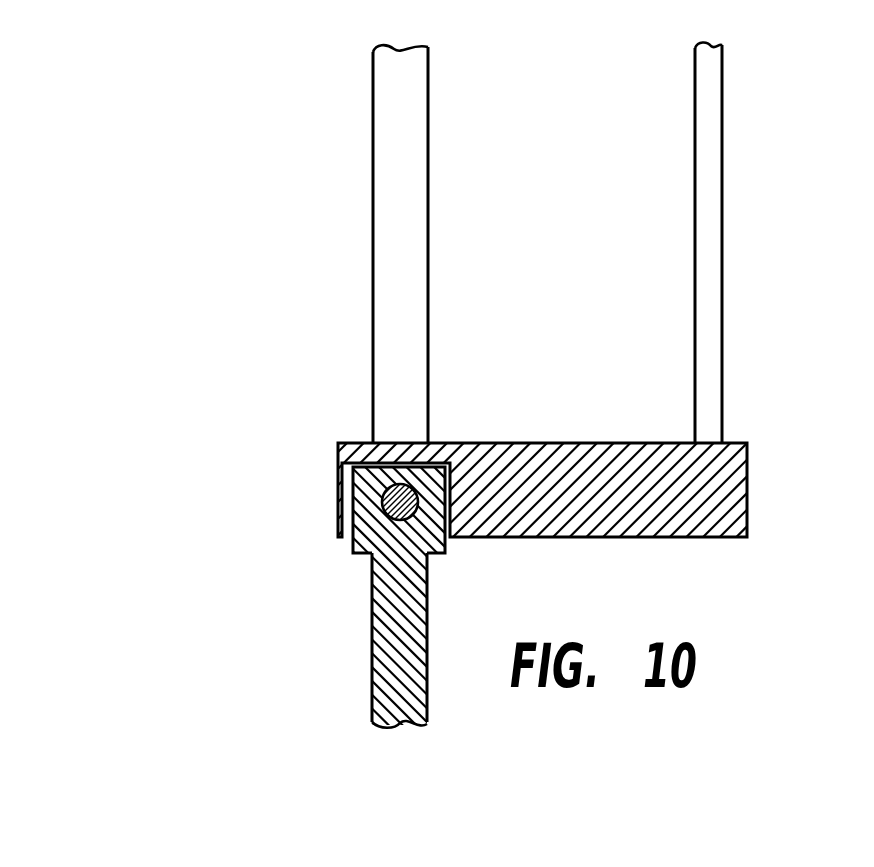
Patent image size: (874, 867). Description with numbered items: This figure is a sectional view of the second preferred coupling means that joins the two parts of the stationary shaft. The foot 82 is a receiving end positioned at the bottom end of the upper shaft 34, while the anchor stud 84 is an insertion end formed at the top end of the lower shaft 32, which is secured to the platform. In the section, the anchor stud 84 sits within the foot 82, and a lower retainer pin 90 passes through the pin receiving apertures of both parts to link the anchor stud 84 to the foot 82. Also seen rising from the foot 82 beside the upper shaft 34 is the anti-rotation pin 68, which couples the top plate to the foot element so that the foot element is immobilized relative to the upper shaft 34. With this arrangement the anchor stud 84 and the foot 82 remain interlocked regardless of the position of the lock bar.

The lower shaft 32 is at (372, 628).
The upper shaft 34 is at (428, 200).
The anti-rotation pin 68 is at (722, 200).
The foot 82 is at (747, 478).
The anchor stud 84 is at (357, 540).
The lower retainer pin 90 is at (384, 499).